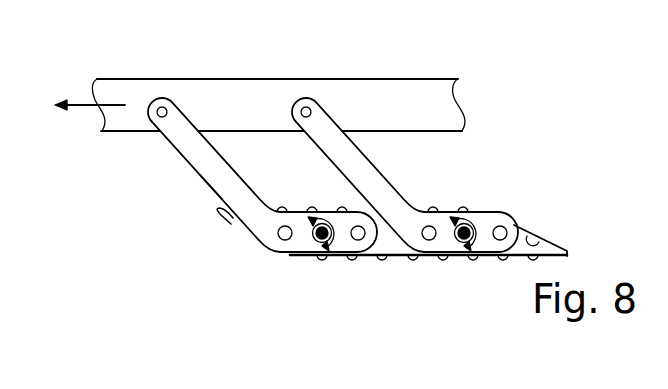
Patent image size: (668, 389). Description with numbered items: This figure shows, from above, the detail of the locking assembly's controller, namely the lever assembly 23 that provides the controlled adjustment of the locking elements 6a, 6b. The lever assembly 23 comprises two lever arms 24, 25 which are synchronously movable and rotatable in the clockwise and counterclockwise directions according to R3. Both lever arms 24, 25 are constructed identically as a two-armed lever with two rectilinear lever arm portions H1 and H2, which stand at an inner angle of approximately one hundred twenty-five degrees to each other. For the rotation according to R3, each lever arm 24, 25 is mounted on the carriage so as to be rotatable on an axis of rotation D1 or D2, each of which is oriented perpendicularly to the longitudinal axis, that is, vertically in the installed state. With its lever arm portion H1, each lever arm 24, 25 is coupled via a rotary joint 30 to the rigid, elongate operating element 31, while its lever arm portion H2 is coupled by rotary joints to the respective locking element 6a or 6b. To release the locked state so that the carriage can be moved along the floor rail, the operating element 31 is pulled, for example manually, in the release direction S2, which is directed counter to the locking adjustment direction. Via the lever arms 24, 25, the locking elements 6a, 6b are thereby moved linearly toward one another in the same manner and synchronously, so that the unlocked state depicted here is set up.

The rotary joint 30 is at (317, 129).
The operating element 31 is at (408, 103).
The release direction S2 is at (82, 104).
The lever assembly 23 is at (292, 143).
The lever arm portion H1 is at (198, 162).
The lever arm 24 is at (375, 192).
The lever arm 25 is at (212, 188).
The locking element 6a is at (222, 218).
The lever arm portion H2 is at (298, 242).
The rotation direction R3 is at (323, 216).
The axis of rotation D2 is at (323, 250).
The axis of rotation D1 is at (463, 258).
The locking element 6b is at (527, 238).